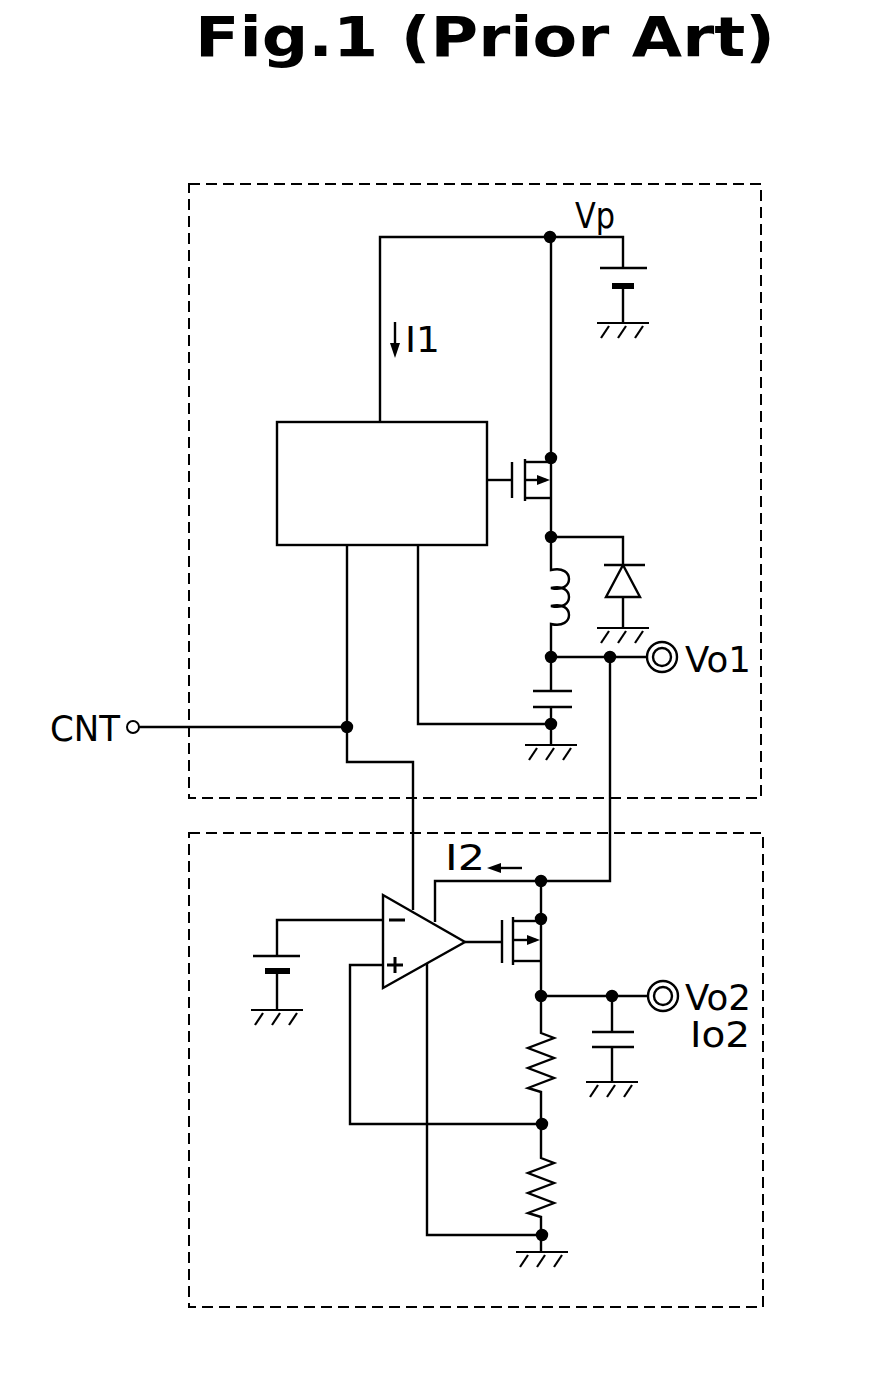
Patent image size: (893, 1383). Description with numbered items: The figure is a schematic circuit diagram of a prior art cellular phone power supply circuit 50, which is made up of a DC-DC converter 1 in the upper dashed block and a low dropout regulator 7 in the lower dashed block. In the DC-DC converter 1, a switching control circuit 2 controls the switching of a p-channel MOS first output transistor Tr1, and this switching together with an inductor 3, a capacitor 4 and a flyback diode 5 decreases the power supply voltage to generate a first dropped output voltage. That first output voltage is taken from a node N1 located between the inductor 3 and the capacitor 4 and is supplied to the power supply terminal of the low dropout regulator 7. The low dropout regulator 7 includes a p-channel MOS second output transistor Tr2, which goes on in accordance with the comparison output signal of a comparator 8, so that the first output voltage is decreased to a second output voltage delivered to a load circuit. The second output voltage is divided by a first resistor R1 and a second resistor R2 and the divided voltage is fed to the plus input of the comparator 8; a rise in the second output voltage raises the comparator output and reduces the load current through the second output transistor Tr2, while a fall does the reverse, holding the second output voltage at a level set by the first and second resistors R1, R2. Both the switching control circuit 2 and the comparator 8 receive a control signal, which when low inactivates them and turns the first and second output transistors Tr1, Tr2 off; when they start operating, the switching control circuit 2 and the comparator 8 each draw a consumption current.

The power supply circuit 50 is at (455, 702).
The DC-DC converter 1 is at (188, 291).
The switching control circuit 2 is at (316, 420).
The inductor 3 is at (530, 600).
The capacitor 4 is at (534, 690).
The flyback diode 5 is at (640, 580).
The low dropout regulator 7 is at (188, 920).
The comparator 8 is at (383, 898).
The first output transistor Tr1 is at (548, 492).
The second output transistor Tr2 is at (536, 952).
The first resistor R1 is at (532, 1058).
The second resistor R2 is at (532, 1182).
The node N1 is at (548, 657).